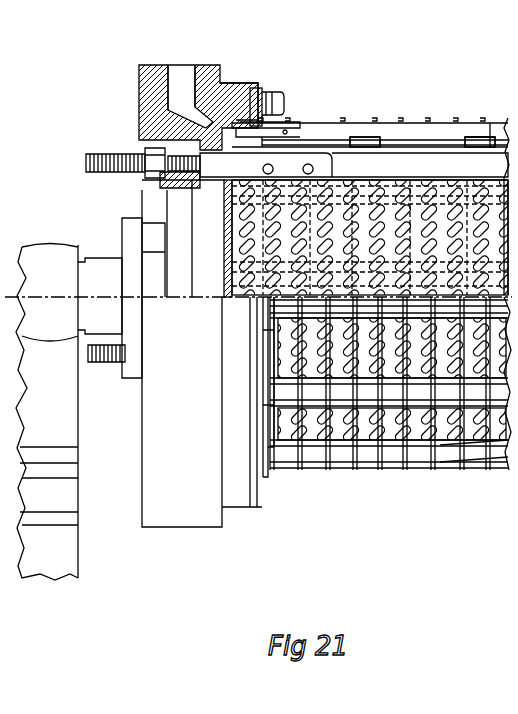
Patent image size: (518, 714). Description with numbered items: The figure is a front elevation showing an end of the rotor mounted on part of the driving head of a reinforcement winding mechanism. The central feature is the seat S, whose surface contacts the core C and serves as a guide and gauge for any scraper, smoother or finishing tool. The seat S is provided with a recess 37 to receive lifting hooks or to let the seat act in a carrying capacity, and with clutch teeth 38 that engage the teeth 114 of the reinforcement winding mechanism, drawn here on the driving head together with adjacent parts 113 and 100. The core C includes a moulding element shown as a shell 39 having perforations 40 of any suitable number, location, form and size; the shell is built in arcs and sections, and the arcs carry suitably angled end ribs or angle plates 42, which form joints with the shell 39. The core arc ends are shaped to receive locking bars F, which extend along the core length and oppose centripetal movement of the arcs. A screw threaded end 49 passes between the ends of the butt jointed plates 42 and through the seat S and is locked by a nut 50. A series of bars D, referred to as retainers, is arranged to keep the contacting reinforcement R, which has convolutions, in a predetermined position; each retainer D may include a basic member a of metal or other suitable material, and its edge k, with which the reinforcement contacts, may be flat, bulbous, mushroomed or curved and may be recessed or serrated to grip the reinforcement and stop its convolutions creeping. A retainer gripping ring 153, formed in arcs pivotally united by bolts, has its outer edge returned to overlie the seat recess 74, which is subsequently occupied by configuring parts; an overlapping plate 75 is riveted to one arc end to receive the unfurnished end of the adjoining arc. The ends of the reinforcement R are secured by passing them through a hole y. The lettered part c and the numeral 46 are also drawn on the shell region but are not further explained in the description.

The broken shaft 100 is at (47, 412).
The hub block 113 is at (130, 262).
The teeth 114 is at (150, 238).
The clutch teeth 38 is at (183, 238).
The seat S is at (139, 106).
The recess 37 is at (184, 72).
The seat recess 74 is at (233, 84).
The ring 153 is at (262, 90).
The overlapping plate 75 is at (278, 114).
The hole y is at (276, 126).
The bar D is at (330, 128).
The edge k is at (380, 123).
The clip c is at (360, 124).
The reinforcement R is at (401, 120).
The basic member a is at (458, 130).
The core C is at (492, 132).
The locking bar F is at (506, 138).
The screw threaded end 49 is at (118, 154).
The nut 50 is at (160, 180).
The end rib 42 is at (266, 165).
The shell 39 is at (420, 165).
The bar segment 46 is at (439, 166).
The perforation 40 is at (458, 486).